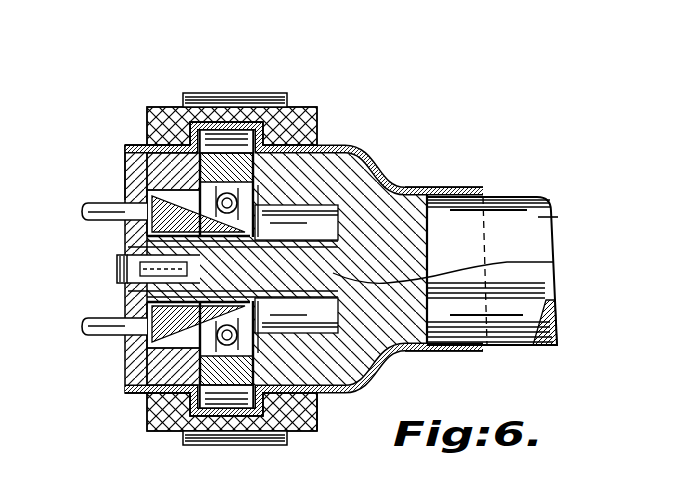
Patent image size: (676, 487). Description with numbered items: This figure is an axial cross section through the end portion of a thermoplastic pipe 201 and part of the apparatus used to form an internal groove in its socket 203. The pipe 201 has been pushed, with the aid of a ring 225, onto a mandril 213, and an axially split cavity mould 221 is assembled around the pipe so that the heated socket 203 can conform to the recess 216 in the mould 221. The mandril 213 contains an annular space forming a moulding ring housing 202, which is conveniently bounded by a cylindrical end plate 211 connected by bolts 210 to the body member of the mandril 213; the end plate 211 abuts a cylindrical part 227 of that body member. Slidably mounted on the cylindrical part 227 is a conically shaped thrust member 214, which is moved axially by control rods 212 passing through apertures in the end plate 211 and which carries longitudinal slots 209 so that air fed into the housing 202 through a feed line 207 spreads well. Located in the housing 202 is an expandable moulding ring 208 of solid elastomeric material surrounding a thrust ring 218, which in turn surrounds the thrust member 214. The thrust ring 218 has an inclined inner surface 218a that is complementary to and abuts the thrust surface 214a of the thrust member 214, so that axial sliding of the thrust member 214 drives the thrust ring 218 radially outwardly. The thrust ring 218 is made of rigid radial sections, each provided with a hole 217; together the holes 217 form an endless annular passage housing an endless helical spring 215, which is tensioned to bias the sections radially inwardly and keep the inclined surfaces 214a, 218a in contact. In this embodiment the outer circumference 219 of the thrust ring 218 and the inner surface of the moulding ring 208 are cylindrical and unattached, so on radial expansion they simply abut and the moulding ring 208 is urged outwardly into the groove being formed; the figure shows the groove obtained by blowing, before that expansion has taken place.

The thermoplastic pipe 201 is at (479, 186).
The moulding ring housing 202 is at (320, 106).
The socket 203 is at (341, 145).
The feed line 207 is at (117, 251).
The moulding ring 208 is at (231, 178).
The longitudinal slots 209 is at (150, 203).
The bolts 210 is at (198, 402).
The end plate 211 is at (125, 187).
The control rods 212 is at (83, 217).
The mandril 213 is at (558, 217).
The thrust member 214 is at (127, 158).
The thrust surface 214a is at (183, 188).
The helical spring 215 is at (227, 342).
The recess 216 is at (205, 143).
The hole 217 is at (257, 339).
The thrust ring 218 is at (246, 206).
The inclined inner surface 218a is at (407, 185).
The outer circumference 219 is at (276, 112).
The split cavity mould 221 is at (157, 112).
The ring 225 is at (138, 146).
The cylindrical part 227 is at (553, 262).